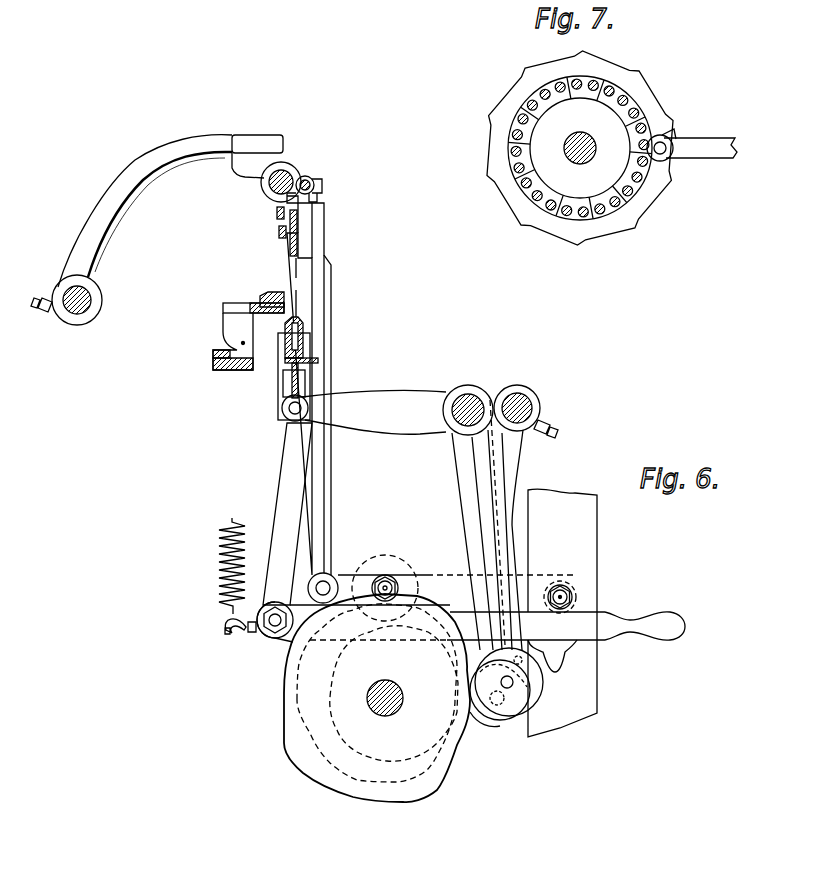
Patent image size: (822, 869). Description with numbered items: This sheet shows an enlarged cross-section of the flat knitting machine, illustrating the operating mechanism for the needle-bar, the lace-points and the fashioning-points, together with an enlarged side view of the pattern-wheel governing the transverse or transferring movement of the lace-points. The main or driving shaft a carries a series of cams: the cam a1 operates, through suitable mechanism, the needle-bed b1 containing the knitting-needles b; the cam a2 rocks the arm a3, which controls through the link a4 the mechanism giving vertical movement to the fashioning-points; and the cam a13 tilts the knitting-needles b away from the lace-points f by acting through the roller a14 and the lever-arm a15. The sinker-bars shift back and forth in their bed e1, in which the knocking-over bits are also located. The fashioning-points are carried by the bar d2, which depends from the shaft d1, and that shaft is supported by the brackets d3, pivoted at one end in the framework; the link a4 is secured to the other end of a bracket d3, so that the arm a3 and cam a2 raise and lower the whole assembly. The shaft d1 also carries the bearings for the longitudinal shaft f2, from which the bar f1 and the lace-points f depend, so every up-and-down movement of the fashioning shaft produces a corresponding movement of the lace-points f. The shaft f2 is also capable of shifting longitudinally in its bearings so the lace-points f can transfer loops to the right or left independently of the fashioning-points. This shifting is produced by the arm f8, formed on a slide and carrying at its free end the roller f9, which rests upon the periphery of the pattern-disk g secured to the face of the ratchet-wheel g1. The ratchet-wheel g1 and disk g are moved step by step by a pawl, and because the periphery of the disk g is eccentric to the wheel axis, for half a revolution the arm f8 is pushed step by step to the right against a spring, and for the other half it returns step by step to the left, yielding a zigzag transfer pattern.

In FIG. 6, the bracket d3 is at (117, 180).
In FIG. 6, the shaft d1 is at (285, 175).
In FIG. 6, the shaft f2 is at (312, 182).
In FIG. 6, the bar d2 is at (278, 232).
In FIG. 6, the bar f1 is at (288, 249).
In FIG. 6, the lace-points f is at (297, 268).
In FIG. 6, the link a4 is at (328, 478).
In FIG. 6, the knitting-needles b is at (297, 303).
In FIG. 6, the needle-bed b1 is at (304, 343).
In FIG. 6, the bed e1 is at (265, 295).
In FIG. 6, the lever-arm a15 is at (525, 455).
In FIG. 6, the arm a3 is at (443, 558).
In FIG. 6, the shaft a is at (395, 705).
In FIG. 6, the cam a1 is at (290, 683).
In FIG. 6, the cam a2 is at (327, 720).
In FIG. 6, the cam a13 is at (470, 747).
In FIG. 6, the roller a14 is at (510, 732).
In FIG. 7, the pattern-disk g is at (508, 140).
In FIG. 7, the ratchet-wheel g1 is at (583, 232).
In FIG. 7, the roller f9 is at (669, 133).
In FIG. 7, the arm f8 is at (738, 150).